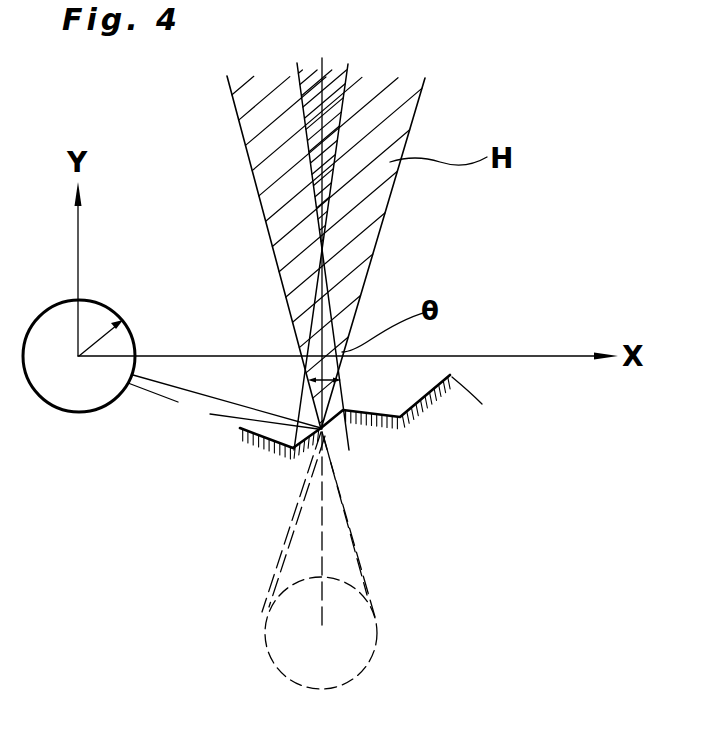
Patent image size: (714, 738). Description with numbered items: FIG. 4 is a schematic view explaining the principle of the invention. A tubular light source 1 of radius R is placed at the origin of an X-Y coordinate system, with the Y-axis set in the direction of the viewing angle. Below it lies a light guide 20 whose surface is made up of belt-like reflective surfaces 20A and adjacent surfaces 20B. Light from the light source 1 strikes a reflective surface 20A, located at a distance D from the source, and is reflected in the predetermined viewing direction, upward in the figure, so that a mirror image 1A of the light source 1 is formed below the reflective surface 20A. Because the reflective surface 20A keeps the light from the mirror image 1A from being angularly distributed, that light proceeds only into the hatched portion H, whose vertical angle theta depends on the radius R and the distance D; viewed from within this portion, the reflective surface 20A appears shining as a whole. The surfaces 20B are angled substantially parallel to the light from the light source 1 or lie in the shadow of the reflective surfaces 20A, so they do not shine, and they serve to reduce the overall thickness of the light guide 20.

The light source 1 is at (52, 406).
The mirror image of the light source 1A is at (377, 645).
The light guide 20 is at (352, 459).
The reflective surface 20A is at (423, 402).
The surface 20B is at (382, 418).